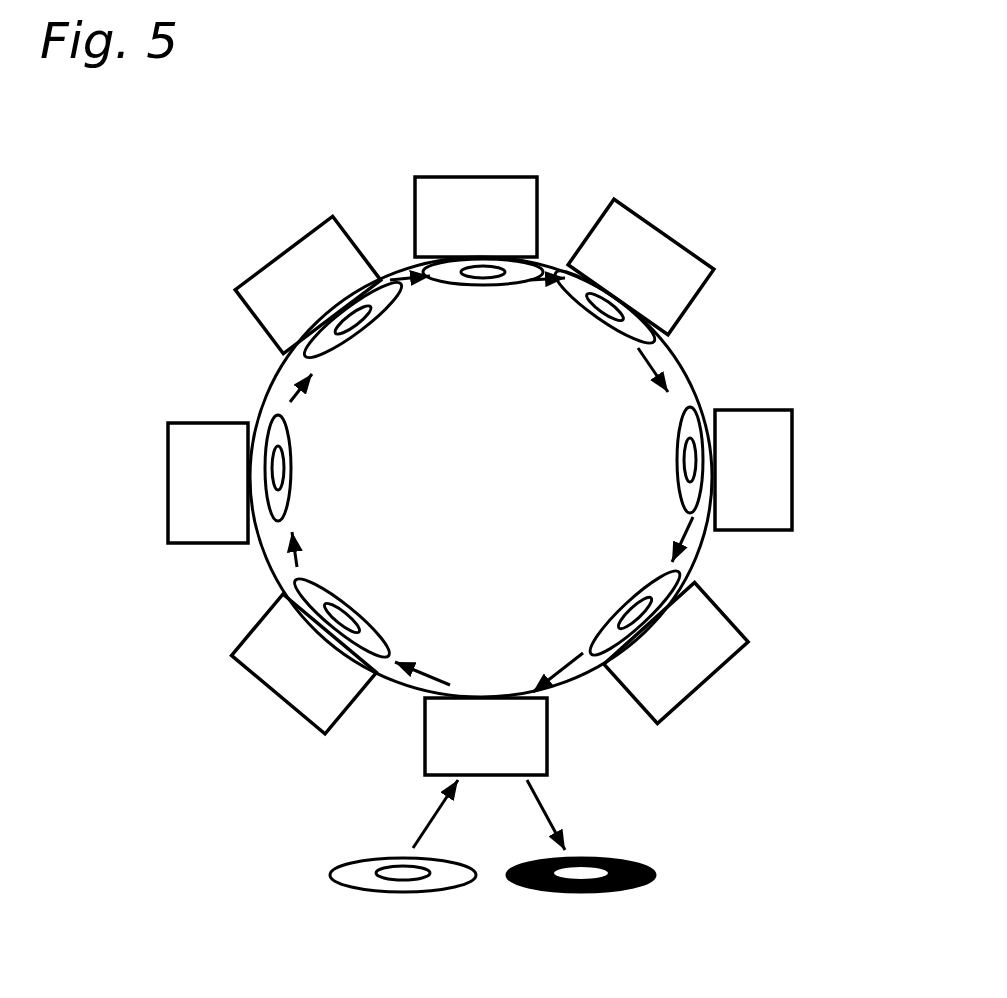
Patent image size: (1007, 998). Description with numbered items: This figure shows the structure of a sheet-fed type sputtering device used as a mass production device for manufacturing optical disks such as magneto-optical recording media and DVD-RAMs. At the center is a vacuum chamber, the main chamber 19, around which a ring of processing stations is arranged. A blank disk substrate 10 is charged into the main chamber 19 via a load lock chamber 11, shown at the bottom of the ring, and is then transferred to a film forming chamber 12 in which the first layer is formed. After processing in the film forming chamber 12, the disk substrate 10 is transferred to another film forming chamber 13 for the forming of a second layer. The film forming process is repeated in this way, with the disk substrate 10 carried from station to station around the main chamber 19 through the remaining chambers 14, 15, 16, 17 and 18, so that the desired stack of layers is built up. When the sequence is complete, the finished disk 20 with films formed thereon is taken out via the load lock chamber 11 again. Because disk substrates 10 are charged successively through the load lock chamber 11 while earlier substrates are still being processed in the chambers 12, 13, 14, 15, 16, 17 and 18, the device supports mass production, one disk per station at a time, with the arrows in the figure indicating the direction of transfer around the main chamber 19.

The disk substrate 10 is at (413, 880).
The load lock chamber 11 is at (457, 742).
The film forming chamber 12 is at (305, 675).
The film forming chamber 13 is at (202, 462).
The processing station 14 is at (333, 255).
The processing station 15 is at (487, 217).
The processing station 16 is at (649, 248).
The processing station 17 is at (738, 462).
The processing station 18 is at (677, 655).
The main chamber 19 is at (488, 462).
The disk 20 is at (590, 892).